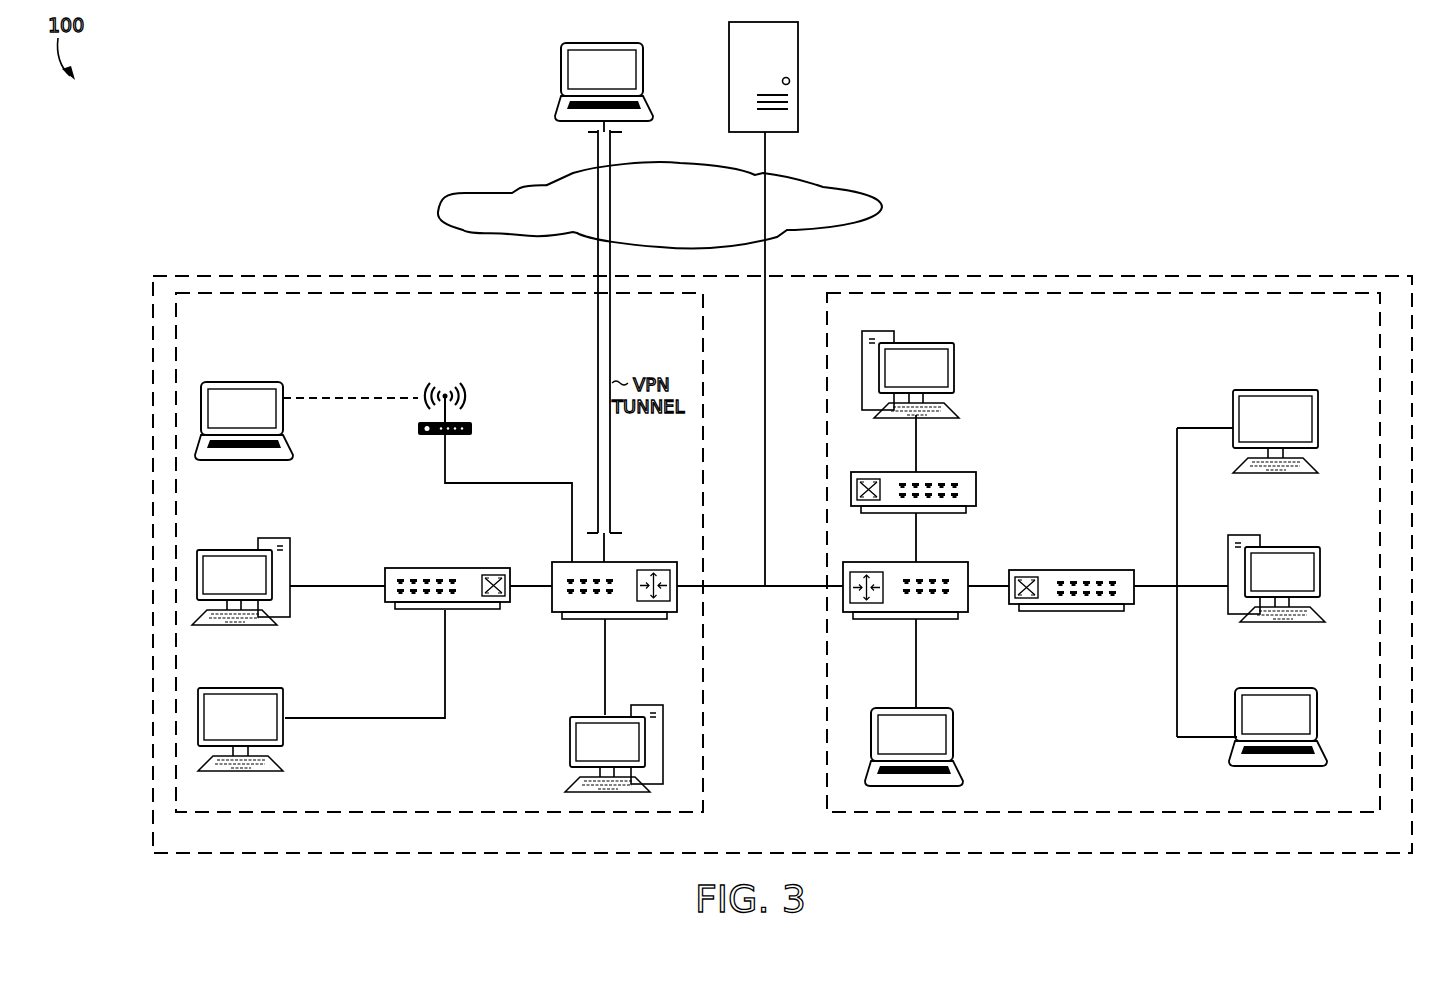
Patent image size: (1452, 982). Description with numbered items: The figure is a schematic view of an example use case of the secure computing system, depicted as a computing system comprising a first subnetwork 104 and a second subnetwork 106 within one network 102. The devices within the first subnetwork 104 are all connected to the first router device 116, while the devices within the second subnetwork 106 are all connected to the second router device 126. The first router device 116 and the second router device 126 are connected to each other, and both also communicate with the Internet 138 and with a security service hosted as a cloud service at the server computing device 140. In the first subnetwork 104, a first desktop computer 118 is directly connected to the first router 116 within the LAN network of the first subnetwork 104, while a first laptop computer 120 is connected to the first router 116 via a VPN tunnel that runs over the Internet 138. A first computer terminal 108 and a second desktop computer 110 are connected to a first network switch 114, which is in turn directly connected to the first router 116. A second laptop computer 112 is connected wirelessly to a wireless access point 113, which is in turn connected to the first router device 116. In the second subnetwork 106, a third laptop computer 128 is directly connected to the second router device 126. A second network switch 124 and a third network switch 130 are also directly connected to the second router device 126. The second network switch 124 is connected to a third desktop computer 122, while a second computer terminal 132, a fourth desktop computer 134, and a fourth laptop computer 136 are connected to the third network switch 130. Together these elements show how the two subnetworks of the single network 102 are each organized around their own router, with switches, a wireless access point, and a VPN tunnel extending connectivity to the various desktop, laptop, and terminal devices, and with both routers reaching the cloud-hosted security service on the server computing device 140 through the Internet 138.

The network 102 is at (782, 564).
The first subnetwork 104 is at (439, 552).
The second subnetwork 106 is at (1103, 552).
The first computer terminal 108 is at (250, 690).
The second desktop computer 110 is at (248, 554).
The second laptop computer 112 is at (252, 380).
The wireless access point 113 is at (472, 402).
The first network switch 114 is at (467, 567).
The first router device 116 is at (636, 562).
The first desktop computer 118 is at (597, 715).
The first laptop computer 120 is at (615, 41).
The third desktop computer 122 is at (924, 342).
The second network switch 124 is at (937, 472).
The second router device 126 is at (942, 562).
The third laptop computer 128 is at (927, 708).
The third network switch 130 is at (1067, 570).
The second computer terminal 132 is at (1272, 390).
The fourth desktop computer 134 is at (1272, 547).
The fourth laptop computer 136 is at (1272, 688).
The Internet 138 is at (494, 192).
The server computing device 140 is at (800, 58).